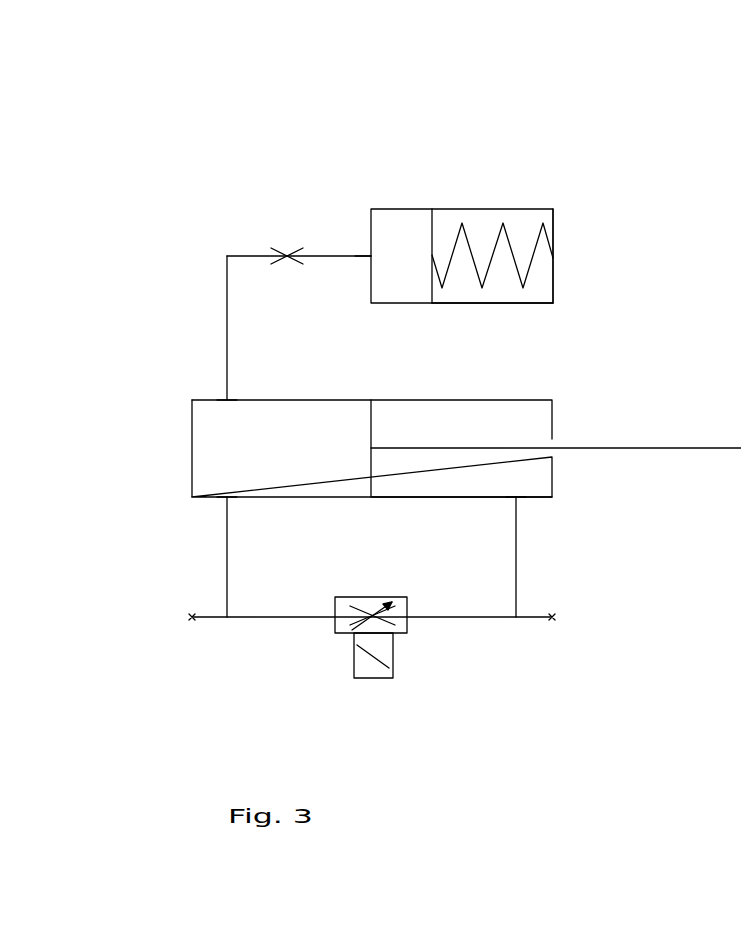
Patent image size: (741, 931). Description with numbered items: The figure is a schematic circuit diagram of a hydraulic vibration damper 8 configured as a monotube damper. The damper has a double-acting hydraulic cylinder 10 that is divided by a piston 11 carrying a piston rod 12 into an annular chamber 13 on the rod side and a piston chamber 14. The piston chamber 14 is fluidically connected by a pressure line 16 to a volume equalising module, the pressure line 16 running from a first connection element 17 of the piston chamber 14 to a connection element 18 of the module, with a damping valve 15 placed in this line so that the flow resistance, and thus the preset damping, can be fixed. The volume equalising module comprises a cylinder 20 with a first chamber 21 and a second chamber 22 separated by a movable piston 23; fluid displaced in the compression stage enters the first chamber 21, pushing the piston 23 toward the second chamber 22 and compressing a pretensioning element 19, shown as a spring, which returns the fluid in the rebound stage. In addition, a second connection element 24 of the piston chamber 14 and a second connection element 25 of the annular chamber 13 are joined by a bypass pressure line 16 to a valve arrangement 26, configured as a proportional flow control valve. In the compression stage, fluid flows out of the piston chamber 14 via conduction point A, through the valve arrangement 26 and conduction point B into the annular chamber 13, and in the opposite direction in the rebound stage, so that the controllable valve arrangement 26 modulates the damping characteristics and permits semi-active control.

The hydraulic vibration damper 8 is at (132, 214).
The double-acting hydraulic cylinder 10 is at (498, 400).
The piston 11 is at (371, 415).
The piston rod 12 is at (645, 448).
The annular chamber 13 is at (545, 492).
The piston chamber 14 is at (205, 447).
The damping valve 15 is at (292, 250).
The pressure line 16 is at (227, 312).
The first connection element 17 is at (227, 399).
The connection element 18 is at (370, 256).
The pretensioning element 19 is at (500, 222).
The cylinder 20 is at (553, 215).
The first chamber 21 is at (400, 209).
The second chamber 22 is at (541, 290).
The piston 23 is at (432, 225).
The second connection element 24 is at (227, 497).
The second connection element 25 is at (520, 497).
The valve arrangement 26 is at (408, 633).
The conduction point A is at (227, 617).
The conduction point B is at (516, 617).